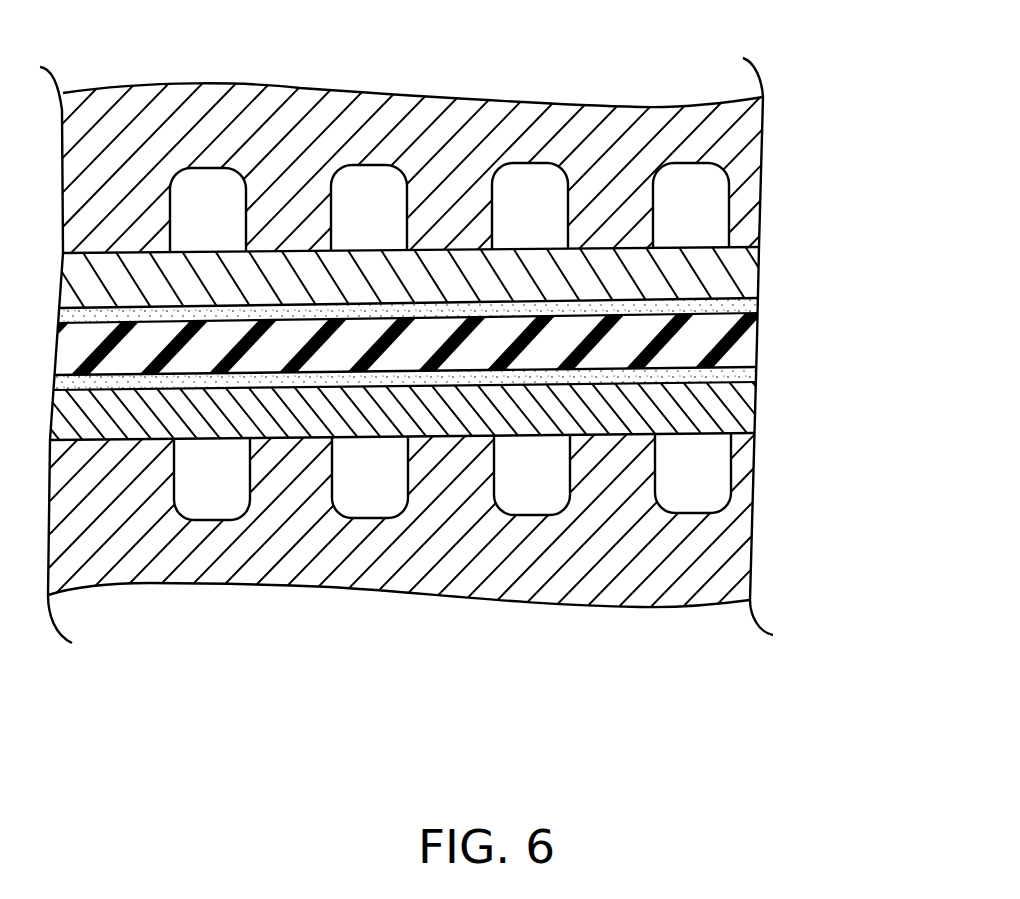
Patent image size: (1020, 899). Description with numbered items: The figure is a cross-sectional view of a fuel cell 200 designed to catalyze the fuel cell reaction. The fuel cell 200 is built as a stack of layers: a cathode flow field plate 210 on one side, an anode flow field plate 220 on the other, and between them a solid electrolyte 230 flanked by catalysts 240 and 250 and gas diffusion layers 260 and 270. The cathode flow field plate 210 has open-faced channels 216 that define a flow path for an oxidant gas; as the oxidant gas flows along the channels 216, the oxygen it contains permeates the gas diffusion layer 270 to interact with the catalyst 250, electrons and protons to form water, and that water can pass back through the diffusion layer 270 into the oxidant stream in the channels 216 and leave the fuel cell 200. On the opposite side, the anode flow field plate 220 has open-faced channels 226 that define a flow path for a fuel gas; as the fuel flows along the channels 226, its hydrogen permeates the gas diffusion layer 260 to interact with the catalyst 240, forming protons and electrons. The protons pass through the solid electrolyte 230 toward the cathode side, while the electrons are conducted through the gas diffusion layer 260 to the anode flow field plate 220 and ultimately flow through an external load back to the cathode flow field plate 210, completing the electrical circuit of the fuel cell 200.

The fuel cell 200 is at (499, 387).
The cathode flow field plate 210 is at (447, 162).
The open-faced channels 216 is at (370, 167).
The anode flow field plate 220 is at (482, 533).
The open-faced channels 226 is at (371, 538).
The solid electrolyte 230 is at (737, 350).
The catalyst 240 is at (747, 373).
The catalyst 250 is at (748, 306).
The gas diffusion layer 260 is at (737, 398).
The gas diffusion layer 270 is at (740, 273).